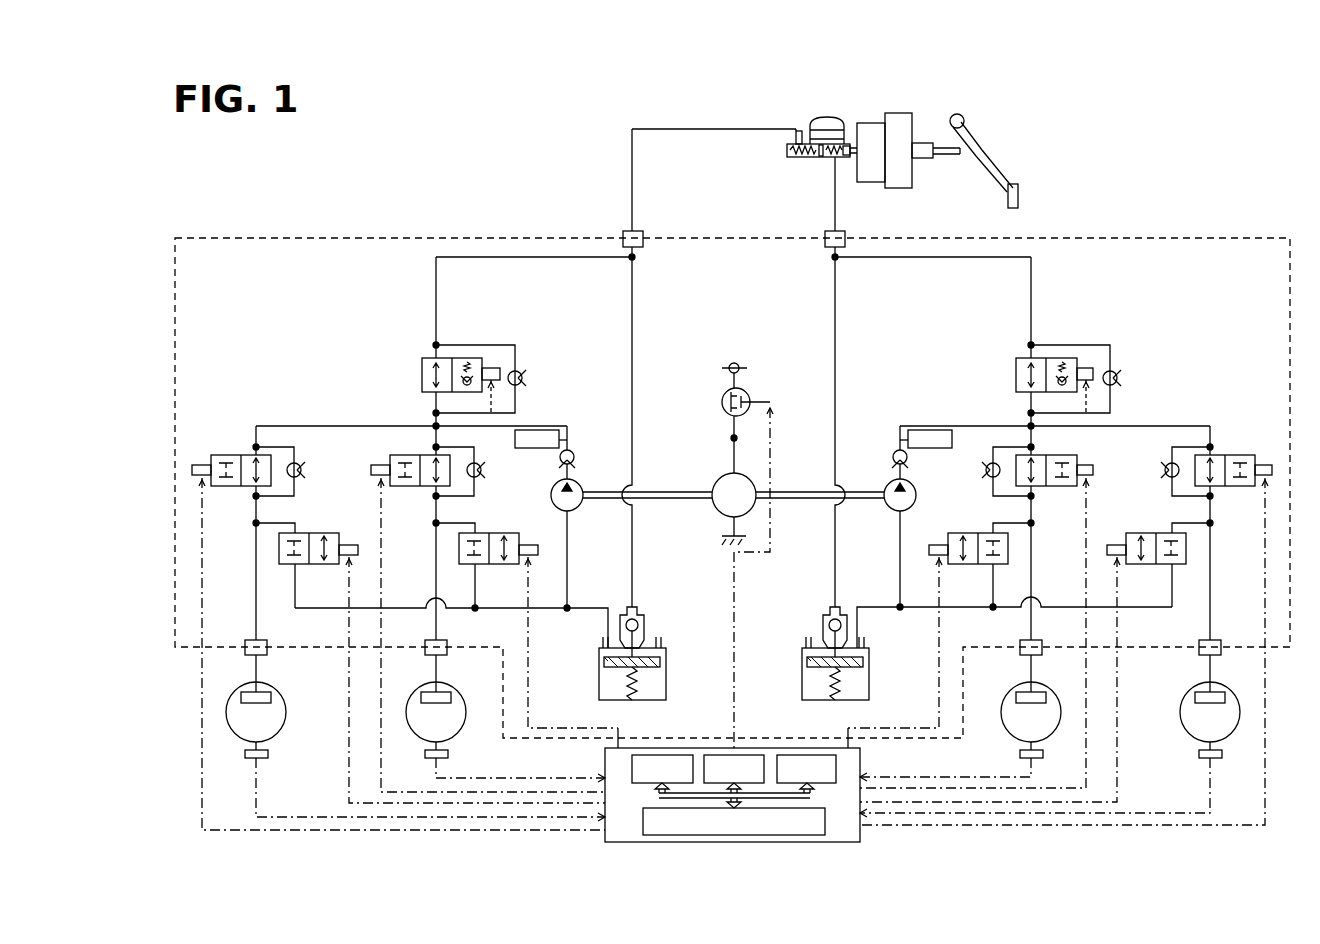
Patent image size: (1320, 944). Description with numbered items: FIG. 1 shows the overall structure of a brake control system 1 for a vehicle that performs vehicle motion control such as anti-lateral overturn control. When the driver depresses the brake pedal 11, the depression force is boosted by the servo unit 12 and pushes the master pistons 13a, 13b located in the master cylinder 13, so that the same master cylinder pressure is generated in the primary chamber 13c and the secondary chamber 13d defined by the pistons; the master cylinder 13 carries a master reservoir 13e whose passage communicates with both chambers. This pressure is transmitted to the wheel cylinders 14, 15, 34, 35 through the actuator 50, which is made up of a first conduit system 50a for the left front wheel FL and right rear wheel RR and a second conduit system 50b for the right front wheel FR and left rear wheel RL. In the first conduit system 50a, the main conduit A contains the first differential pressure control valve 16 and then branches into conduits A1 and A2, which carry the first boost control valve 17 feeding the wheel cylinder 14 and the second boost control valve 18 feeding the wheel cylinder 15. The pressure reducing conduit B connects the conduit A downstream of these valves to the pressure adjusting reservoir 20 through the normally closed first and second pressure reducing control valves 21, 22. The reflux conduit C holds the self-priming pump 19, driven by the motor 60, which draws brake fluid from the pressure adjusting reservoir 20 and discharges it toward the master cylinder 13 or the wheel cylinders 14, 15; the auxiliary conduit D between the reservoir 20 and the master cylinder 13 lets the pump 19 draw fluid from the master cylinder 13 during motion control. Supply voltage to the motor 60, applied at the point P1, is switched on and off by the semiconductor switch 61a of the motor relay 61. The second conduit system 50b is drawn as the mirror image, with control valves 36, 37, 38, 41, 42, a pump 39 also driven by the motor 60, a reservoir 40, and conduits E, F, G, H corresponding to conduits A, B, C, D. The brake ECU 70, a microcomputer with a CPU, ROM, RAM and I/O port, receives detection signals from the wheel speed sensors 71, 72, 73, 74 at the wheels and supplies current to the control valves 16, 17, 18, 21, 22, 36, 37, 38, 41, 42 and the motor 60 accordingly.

The brake control system 1 is at (1080, 143).
The brake pedal 11 is at (972, 140).
The servo unit 12 is at (897, 113).
The master cylinder 13 is at (782, 150).
The master piston 13a is at (821, 158).
The master piston 13b is at (849, 158).
The primary chamber 13c is at (796, 158).
The secondary chamber 13d is at (840, 158).
The master reservoir 13e is at (820, 118).
The wheel cylinder 14 is at (240, 697).
The wheel cylinder 15 is at (421, 697).
The first differential pressure control valve 16 is at (422, 377).
The first boost control valve 17 is at (242, 455).
The second boost control valve 18 is at (425, 455).
The self-priming pump 19 is at (551, 495).
The pressure adjusting reservoir 20 is at (595, 690).
The first pressure reducing control valve 21 is at (302, 533).
The second pressure reducing control valve 22 is at (480, 533).
The wheel cylinder 34 is at (1225, 697).
The wheel cylinder 35 is at (1046, 697).
The control valve 36 is at (1016, 377).
The control valve 37 is at (1222, 455).
The control valve 38 is at (1042, 455).
The pump 39 is at (916, 495).
The reservoir (second circuit) 40 is at (872, 690).
The control valve 41 is at (1165, 533).
The control valve 42 is at (985, 533).
The actuator 50 is at (1280, 238).
The first conduit system 50a is at (243, 290).
The second conduit system 50b is at (1223, 290).
The motor 60 is at (712, 480).
The motor relay 61 is at (728, 390).
The semiconductor switch 61a is at (754, 400).
The brake ECU 70 is at (862, 758).
The wheel speed sensor 71 is at (268, 754).
The wheel speed sensor 72 is at (448, 754).
The wheel speed sensor 73 is at (1019, 754).
The wheel speed sensor 74 is at (1198, 754).
The motor terminal voltage point P1 is at (730, 437).
The conduit A is at (456, 258).
The conduit A1 is at (256, 582).
The conduit A2 is at (436, 582).
The conduit B is at (490, 610).
The conduit C is at (537, 430).
The conduit D is at (633, 293).
The main conduit E is at (1010, 258).
The low-pressure conduit F is at (975, 609).
The pump discharge conduit G is at (928, 430).
The pump suction conduit H is at (835, 293).